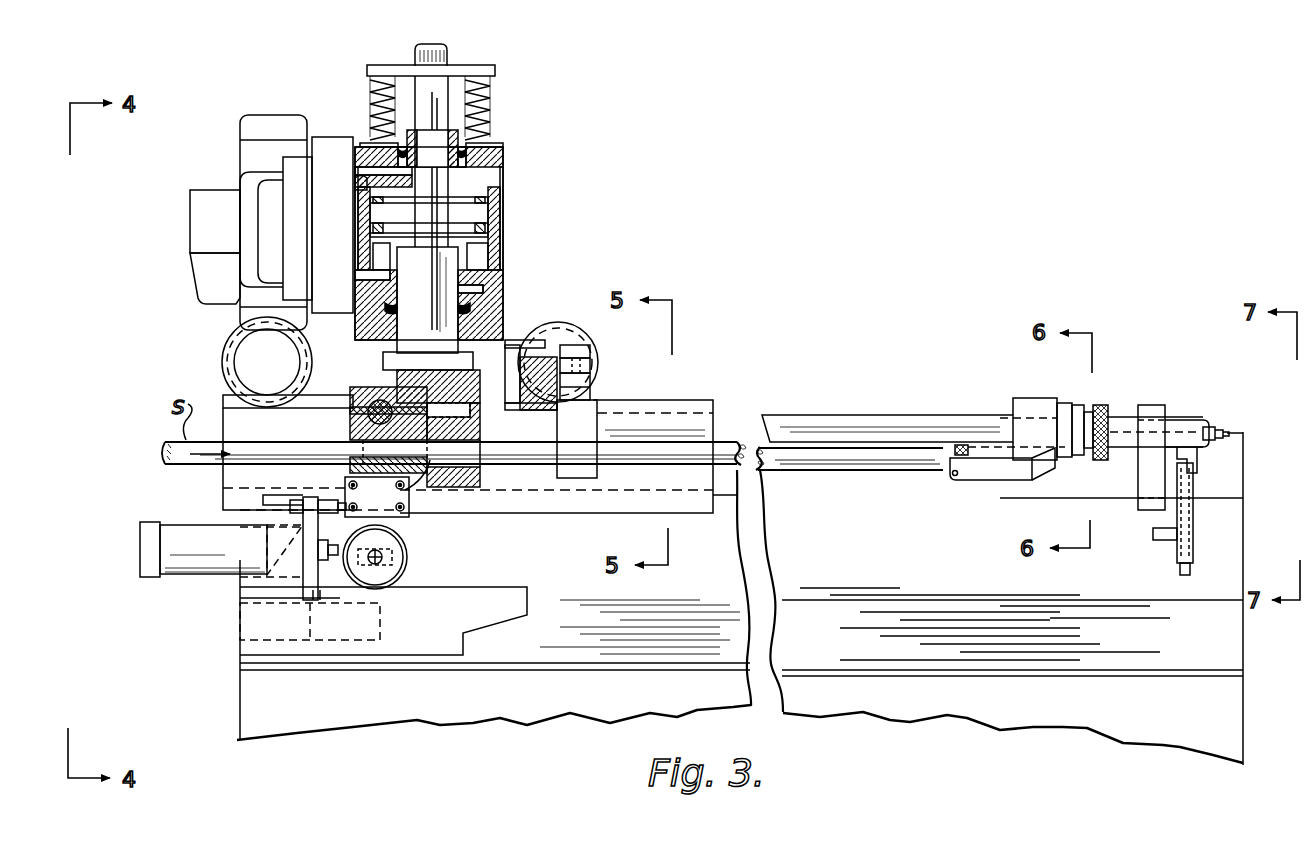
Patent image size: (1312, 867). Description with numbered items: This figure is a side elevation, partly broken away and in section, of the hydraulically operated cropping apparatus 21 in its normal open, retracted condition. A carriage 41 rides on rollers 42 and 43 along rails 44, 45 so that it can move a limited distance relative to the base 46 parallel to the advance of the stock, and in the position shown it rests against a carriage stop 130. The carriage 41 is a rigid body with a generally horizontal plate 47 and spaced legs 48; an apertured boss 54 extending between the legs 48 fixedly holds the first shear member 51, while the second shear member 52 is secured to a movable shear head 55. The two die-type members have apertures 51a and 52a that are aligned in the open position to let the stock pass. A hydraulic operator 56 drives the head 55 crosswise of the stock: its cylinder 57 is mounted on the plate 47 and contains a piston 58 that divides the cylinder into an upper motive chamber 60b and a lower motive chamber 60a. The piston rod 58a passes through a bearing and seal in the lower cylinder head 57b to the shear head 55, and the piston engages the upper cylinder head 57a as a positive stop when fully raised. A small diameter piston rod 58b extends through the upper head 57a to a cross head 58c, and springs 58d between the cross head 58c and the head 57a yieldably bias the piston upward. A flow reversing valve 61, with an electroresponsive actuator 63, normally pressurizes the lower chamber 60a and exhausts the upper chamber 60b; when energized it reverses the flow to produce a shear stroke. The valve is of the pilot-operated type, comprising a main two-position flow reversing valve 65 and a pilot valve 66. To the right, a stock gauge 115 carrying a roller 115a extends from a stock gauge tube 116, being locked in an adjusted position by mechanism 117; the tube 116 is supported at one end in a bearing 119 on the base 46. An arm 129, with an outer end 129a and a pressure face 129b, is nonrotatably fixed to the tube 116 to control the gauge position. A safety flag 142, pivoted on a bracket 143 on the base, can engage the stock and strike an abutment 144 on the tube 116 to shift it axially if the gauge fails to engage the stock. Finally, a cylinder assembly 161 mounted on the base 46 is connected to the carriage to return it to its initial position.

The hydraulically operated cropping apparatus 21 is at (511, 150).
The carriage 41 is at (520, 348).
The roller 42 is at (234, 353).
The roller 43 is at (402, 568).
The rail 44 is at (670, 402).
The rail 45 is at (493, 587).
The base 46 is at (1215, 703).
The horizontal plate 47 is at (492, 346).
The legs 48 is at (507, 348).
The first shear member 51 is at (407, 402).
The aperture 51a is at (352, 432).
The second shear member 52 is at (448, 492).
The aperture 52a is at (457, 484).
The apertured boss 54 is at (352, 420).
The shear head 55 is at (391, 363).
The hydraulic operator 56 is at (508, 190).
The cylinder 57 is at (501, 230).
The upper cylinder head 57a is at (487, 144).
The lower cylinder head 57b is at (496, 293).
The piston member 58 is at (495, 206).
The piston rod 58a is at (446, 280).
The small diameter piston rod 58b is at (433, 96).
The cross head 58c is at (495, 70).
The springs 58d is at (490, 96).
The lower fluid pressure motive chamber 60a is at (483, 256).
The upper fluid pressure motive chamber 60b is at (358, 184).
The flow reversing valve 61 is at (270, 114).
The electroresponsive actuator 63 is at (190, 284).
The main two-position flow reversing valve 65 is at (240, 150).
The pilot valve 66 is at (189, 214).
The stock gauge 115 is at (972, 474).
The roller 115a is at (946, 444).
The stock gauge tube 116 is at (840, 412).
The locking mechanism 117 is at (1102, 404).
The bearing 119 is at (1155, 405).
The arm 129 is at (590, 394).
The outer end 129a is at (590, 355).
The pressure face 129b is at (590, 374).
The carriage stop 130 is at (343, 496).
The safety flag 142 is at (1182, 522).
The bracket 143 is at (1186, 570).
The abutment 144 is at (1198, 458).
The cylinder assembly 161 is at (209, 580).